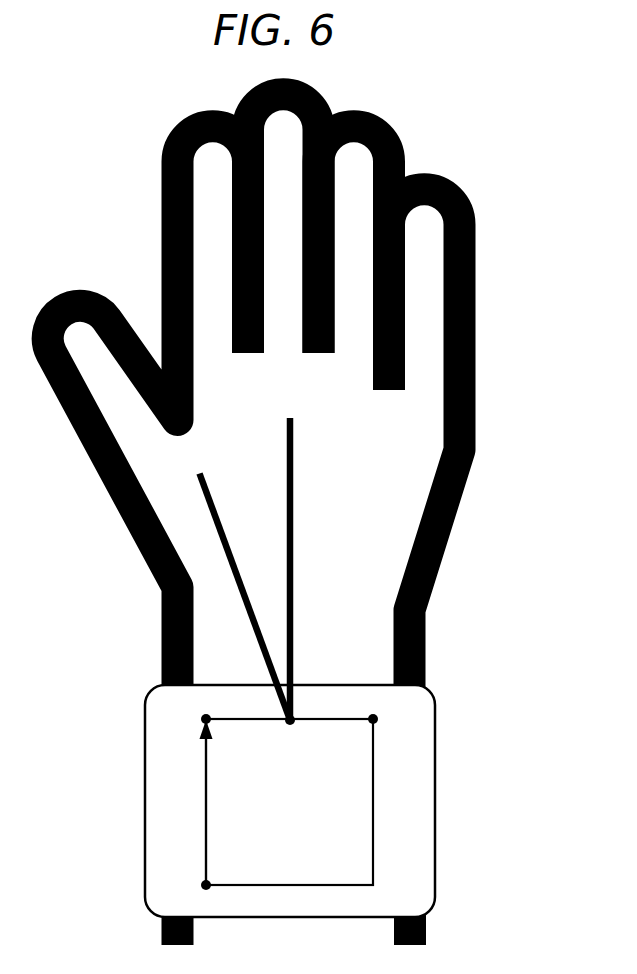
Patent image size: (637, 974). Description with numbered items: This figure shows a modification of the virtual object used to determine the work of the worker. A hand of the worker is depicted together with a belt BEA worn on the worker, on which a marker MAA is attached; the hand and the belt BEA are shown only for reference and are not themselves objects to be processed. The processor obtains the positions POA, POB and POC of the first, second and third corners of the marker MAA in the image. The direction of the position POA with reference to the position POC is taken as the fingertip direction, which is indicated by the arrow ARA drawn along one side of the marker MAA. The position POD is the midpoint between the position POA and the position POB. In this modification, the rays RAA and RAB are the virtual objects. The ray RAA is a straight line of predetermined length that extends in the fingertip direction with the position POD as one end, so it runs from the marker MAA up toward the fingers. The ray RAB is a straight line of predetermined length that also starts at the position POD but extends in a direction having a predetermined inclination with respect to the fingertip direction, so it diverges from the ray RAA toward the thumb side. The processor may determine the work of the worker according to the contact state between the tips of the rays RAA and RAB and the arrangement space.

The ray RAA is at (293, 501).
The ray RAB is at (223, 530).
The position of the first corner POA is at (207, 716).
The position of the second corner POB is at (372, 717).
The position of the third corner POC is at (208, 884).
The position of the midpoint POD is at (290, 722).
The arrow ARA is at (208, 724).
The marker MAA is at (367, 807).
The belt BEA is at (431, 753).